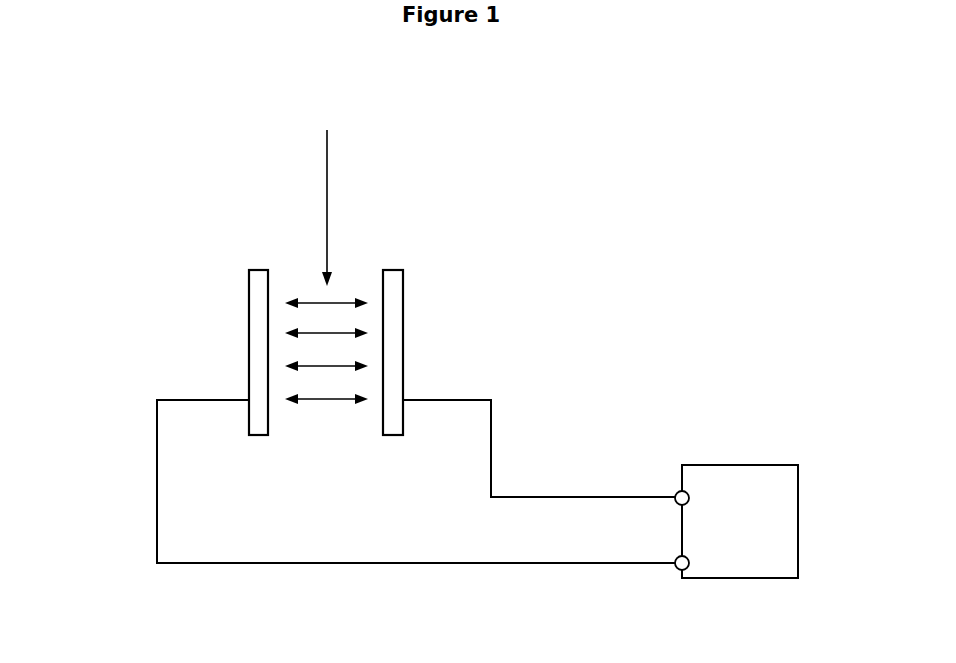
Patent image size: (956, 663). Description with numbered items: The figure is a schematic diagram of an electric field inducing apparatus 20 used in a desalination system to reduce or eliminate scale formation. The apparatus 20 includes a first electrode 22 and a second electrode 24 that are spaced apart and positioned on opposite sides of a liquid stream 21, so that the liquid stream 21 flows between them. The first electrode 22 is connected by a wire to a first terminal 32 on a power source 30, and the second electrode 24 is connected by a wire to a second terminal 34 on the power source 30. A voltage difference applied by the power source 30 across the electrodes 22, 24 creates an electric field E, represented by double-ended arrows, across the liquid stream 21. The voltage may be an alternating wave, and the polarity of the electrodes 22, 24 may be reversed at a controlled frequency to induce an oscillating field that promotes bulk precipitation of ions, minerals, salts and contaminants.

The electric field inducing apparatus 20 is at (461, 158).
The liquid stream 21 is at (327, 217).
The first electrode 22 is at (258, 362).
The second electrode 24 is at (393, 385).
The electric field E is at (327, 333).
The power source 30 is at (742, 498).
The first terminal 32 is at (677, 570).
The second terminal 34 is at (680, 492).